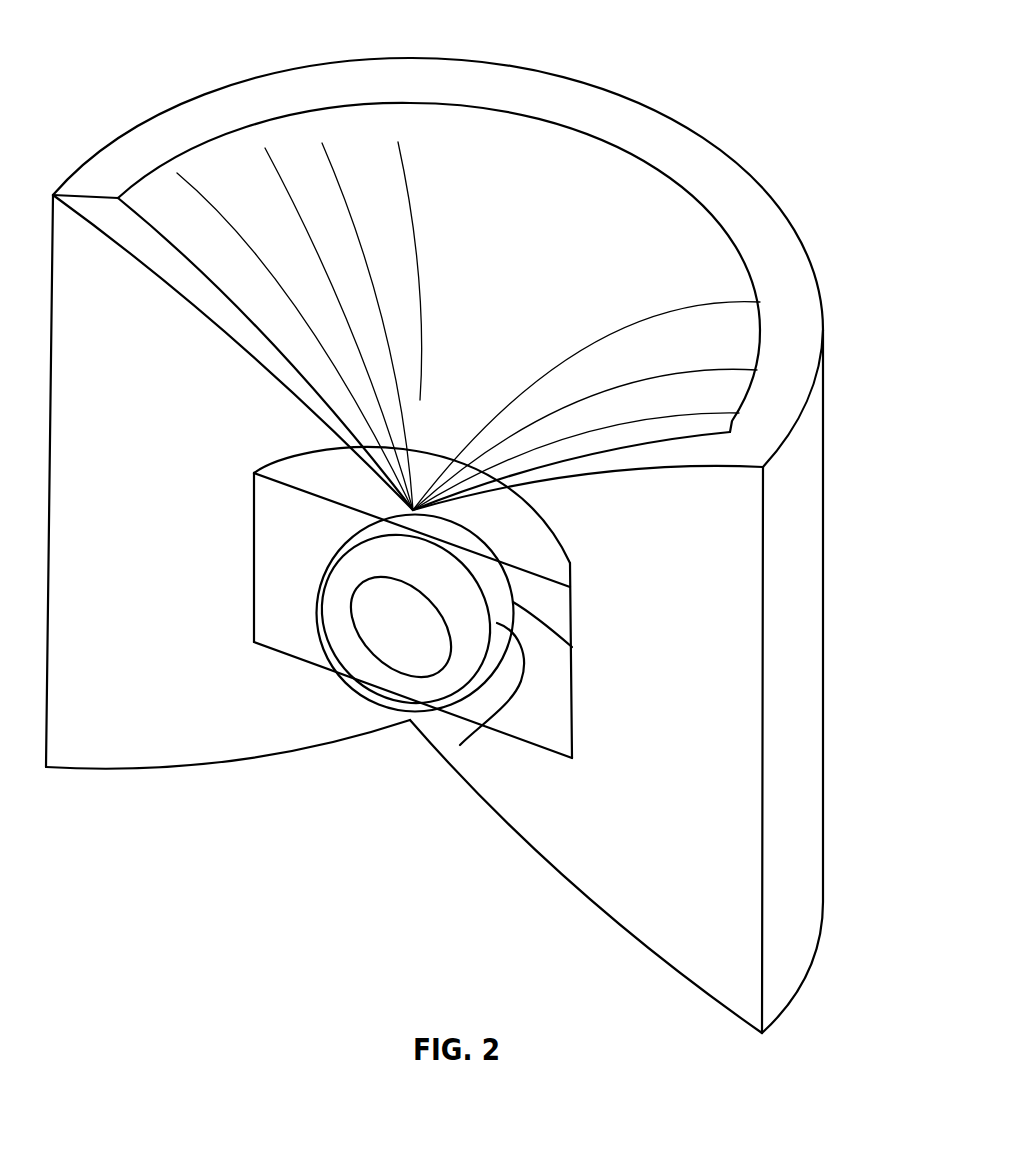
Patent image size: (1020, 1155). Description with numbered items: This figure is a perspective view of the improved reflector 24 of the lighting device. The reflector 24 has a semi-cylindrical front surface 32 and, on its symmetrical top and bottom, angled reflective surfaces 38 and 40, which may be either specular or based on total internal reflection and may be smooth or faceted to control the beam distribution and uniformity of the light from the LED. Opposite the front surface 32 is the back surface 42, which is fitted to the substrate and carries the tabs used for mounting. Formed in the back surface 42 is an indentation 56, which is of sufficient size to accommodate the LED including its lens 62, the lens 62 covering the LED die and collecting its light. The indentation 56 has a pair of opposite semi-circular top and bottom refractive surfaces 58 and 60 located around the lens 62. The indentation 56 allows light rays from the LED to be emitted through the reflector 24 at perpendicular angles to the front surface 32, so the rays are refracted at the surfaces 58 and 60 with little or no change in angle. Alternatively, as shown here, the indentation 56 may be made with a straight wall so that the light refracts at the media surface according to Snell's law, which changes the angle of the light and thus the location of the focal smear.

The reflector 24 is at (640, 88).
The semi-cylindrical front surface 32 is at (812, 432).
The angled reflective surface 38 is at (712, 240).
The angled reflective surface 40 is at (653, 957).
The back surface 42 is at (745, 537).
The indentation 56 is at (560, 673).
The top refractive surface 58 is at (292, 468).
The bottom refractive surface 60 is at (550, 742).
The lens 62 is at (460, 745).